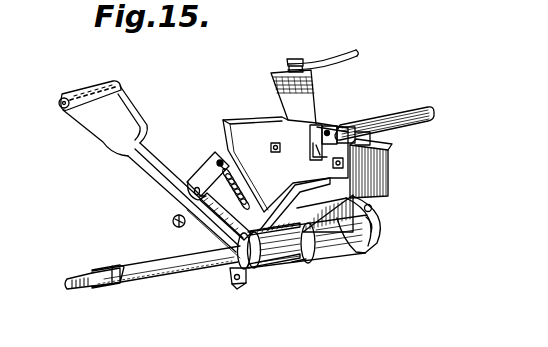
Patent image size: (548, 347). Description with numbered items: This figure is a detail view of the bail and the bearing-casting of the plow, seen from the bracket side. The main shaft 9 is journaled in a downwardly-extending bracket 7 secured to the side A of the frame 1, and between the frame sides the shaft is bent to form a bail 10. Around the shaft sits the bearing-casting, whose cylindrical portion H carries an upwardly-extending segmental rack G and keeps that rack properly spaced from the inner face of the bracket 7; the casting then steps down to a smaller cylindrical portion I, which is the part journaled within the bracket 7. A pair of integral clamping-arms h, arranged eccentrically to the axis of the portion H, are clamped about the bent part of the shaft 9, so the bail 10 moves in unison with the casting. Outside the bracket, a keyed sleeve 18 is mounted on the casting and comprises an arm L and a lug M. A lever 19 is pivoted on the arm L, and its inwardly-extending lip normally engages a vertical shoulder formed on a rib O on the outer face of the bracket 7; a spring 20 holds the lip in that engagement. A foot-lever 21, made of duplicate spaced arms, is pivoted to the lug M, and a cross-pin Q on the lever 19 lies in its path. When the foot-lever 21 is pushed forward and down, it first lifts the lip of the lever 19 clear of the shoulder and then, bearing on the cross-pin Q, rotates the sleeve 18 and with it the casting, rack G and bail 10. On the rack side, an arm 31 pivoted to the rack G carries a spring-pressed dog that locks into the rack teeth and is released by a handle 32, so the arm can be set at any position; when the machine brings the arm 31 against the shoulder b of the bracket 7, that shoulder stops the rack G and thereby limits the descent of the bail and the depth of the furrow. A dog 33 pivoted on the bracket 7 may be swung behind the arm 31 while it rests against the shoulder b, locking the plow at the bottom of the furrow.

The foot-lever 21 is at (60, 110).
The main shaft 9 is at (143, 278).
The cylindrical portion H is at (330, 258).
The sleeve 18 is at (246, 280).
The lug M is at (240, 287).
The smaller cylindrical portion I is at (297, 268).
The cross-pin Q is at (172, 222).
The arm L is at (236, 226).
The lever 19 is at (203, 176).
The spring 20 is at (242, 182).
The frame 1 is at (280, 100).
The bracket 7 is at (306, 187).
The shoulder b is at (280, 86).
The handle 32 is at (357, 50).
The arm 31 is at (313, 118).
The dog 33 is at (330, 128).
The bail 10 is at (403, 110).
The side A is at (388, 178).
The segmental rack G is at (366, 197).
The clamping-arms h is at (374, 212).
The rib O is at (370, 222).